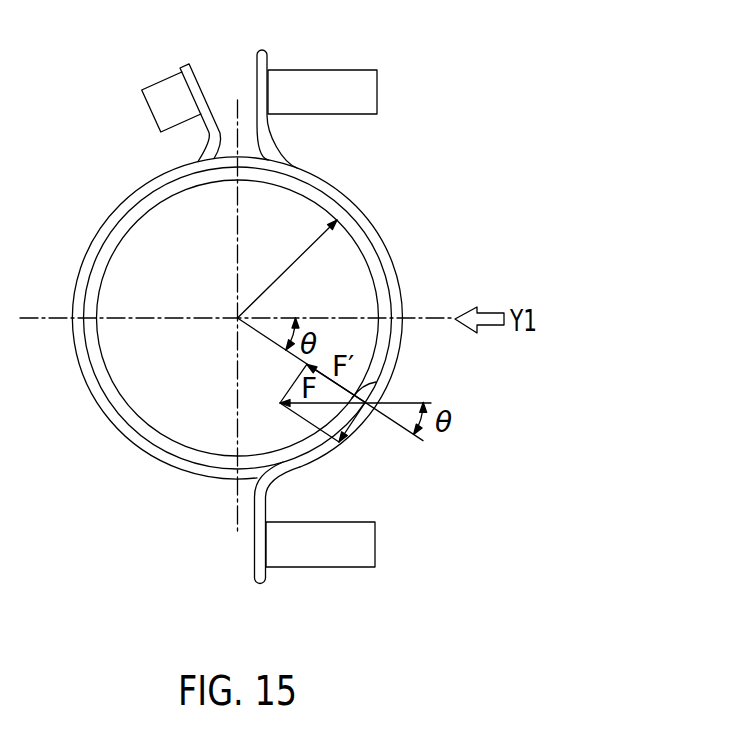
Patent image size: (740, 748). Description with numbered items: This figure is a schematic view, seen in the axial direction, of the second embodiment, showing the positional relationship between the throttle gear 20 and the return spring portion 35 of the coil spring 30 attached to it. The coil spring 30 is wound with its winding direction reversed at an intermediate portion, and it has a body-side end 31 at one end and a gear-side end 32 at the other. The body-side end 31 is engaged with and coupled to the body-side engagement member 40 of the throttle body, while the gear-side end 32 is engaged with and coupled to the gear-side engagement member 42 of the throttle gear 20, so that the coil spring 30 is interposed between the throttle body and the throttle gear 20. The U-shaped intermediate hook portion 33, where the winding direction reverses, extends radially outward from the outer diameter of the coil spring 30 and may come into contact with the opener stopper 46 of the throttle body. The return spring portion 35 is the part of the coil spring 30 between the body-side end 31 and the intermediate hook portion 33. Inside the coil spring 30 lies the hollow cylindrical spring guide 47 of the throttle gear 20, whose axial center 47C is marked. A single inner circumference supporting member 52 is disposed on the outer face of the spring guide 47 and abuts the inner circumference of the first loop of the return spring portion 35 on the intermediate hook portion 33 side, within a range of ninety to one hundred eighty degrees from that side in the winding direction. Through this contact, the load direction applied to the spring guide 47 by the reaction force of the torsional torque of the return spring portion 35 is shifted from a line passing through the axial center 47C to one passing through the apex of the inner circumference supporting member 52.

The coil spring 30 is at (367, 213).
The return spring portion 35 is at (382, 253).
The spring guide 47 is at (238, 346).
The throttle gear 20 is at (148, 393).
The axial center of the spring guide 47C is at (237, 317).
The inner circumference supporting member 52 is at (364, 393).
The body-side end 31 is at (260, 583).
The gear-side end 32 is at (183, 68).
The intermediate hook portion 33 is at (262, 52).
The body-side engagement member 40 is at (335, 545).
The gear-side engagement member 42 is at (155, 93).
The opener stopper 46 is at (343, 87).